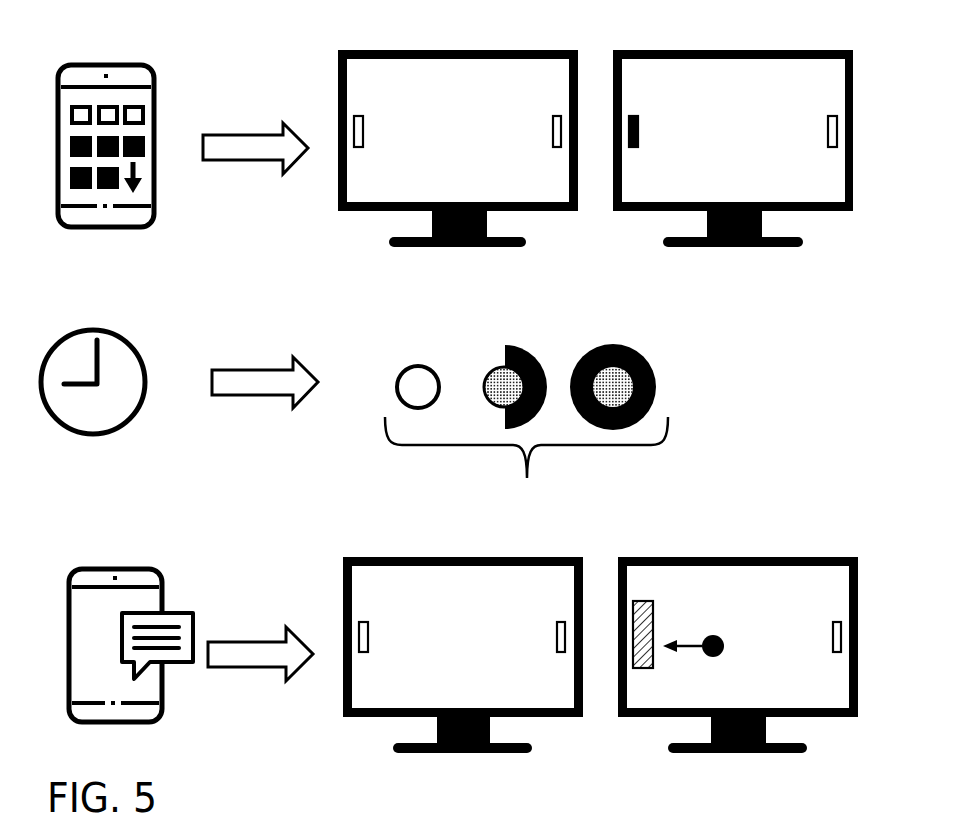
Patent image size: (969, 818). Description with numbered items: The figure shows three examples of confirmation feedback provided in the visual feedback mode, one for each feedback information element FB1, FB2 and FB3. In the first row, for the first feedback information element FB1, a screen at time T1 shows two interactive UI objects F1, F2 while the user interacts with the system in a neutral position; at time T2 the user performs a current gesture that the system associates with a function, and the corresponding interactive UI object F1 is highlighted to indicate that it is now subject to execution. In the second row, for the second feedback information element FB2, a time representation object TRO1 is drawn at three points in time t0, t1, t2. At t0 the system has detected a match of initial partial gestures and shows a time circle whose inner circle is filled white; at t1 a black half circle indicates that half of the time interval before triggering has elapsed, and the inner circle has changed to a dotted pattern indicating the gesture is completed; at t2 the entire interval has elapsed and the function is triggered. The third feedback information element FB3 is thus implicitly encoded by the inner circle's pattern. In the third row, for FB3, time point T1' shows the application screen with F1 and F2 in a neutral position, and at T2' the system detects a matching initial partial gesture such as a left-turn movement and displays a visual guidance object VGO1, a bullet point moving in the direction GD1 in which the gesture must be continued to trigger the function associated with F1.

The first feedback information element FB1 is at (150, 62).
The second feedback information element FB2 is at (139, 342).
The third feedback information element FB3 is at (155, 566).
The first time point T1 is at (458, 123).
The second time point T2 is at (733, 123).
The time point of neutral position T1' is at (463, 628).
The time point of matching initial partial gesture T2' is at (738, 628).
The interactive UI object F1 is at (364, 126).
The interactive UI object F2 is at (551, 122).
The time point t0 is at (420, 353).
The time point t1 is at (510, 338).
The time point t2 is at (618, 338).
The time representation object TRO1 is at (526, 465).
The visual guidance object VGO1 is at (726, 640).
The guidance direction GD1 is at (692, 650).